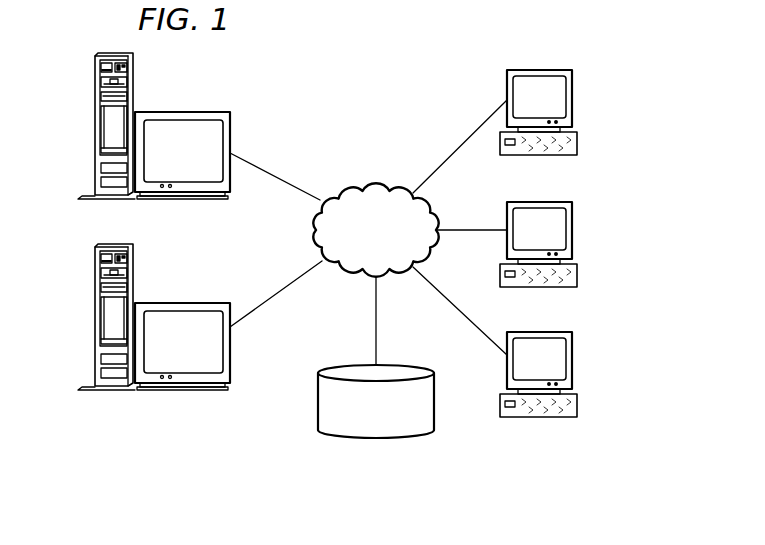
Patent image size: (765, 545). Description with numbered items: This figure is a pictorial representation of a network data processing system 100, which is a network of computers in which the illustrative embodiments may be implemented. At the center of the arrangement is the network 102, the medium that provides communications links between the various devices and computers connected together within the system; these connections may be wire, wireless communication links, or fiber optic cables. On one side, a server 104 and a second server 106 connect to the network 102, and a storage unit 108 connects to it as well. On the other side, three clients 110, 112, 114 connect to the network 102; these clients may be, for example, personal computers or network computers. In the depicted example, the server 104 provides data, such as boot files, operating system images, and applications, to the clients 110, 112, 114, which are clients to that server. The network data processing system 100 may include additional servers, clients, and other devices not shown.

The network data processing system 100 is at (418, 81).
The network 102 is at (350, 185).
The server 104 is at (95, 127).
The server 106 is at (95, 317).
The storage unit 108 is at (360, 440).
The client 110 is at (573, 98).
The client 112 is at (573, 230).
The client 114 is at (573, 357).